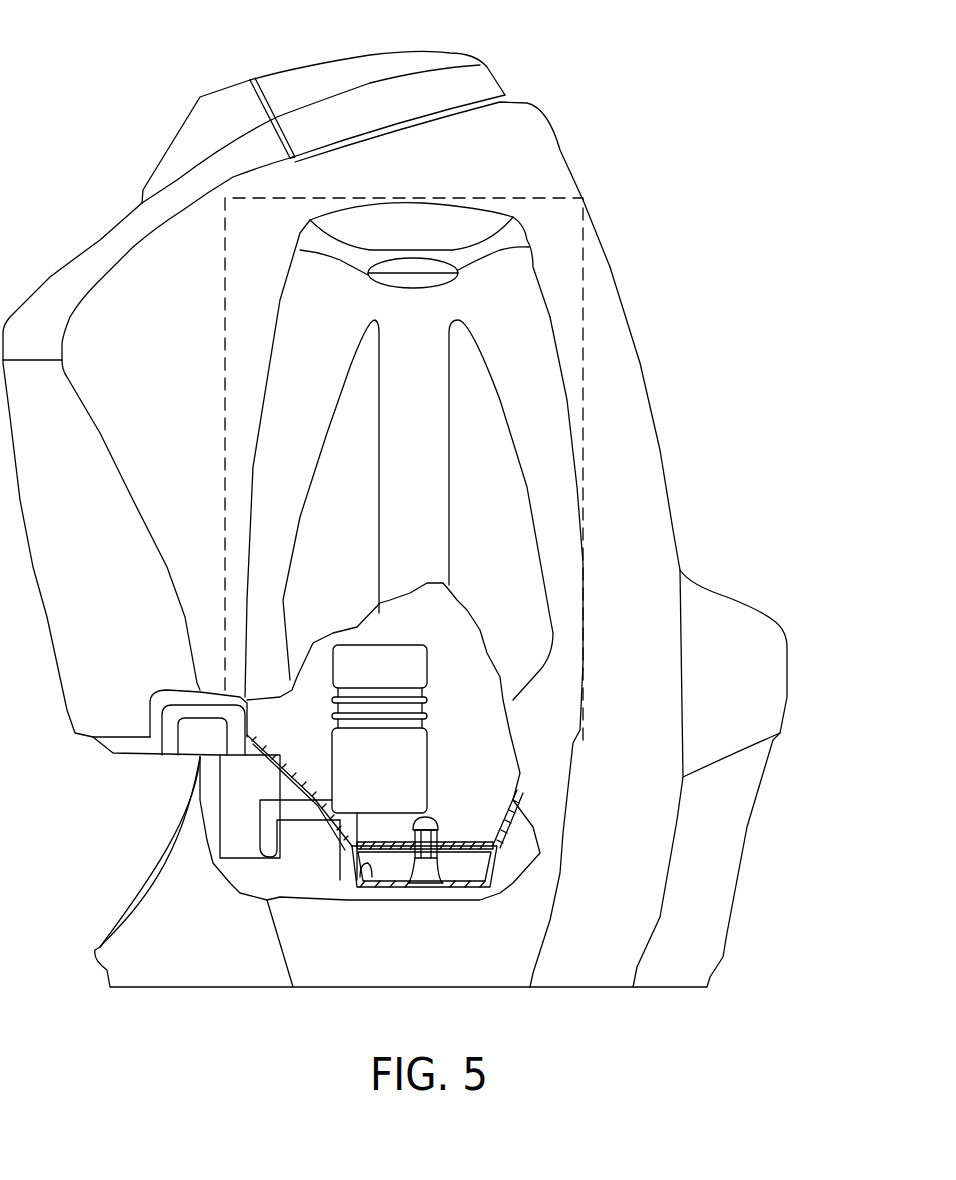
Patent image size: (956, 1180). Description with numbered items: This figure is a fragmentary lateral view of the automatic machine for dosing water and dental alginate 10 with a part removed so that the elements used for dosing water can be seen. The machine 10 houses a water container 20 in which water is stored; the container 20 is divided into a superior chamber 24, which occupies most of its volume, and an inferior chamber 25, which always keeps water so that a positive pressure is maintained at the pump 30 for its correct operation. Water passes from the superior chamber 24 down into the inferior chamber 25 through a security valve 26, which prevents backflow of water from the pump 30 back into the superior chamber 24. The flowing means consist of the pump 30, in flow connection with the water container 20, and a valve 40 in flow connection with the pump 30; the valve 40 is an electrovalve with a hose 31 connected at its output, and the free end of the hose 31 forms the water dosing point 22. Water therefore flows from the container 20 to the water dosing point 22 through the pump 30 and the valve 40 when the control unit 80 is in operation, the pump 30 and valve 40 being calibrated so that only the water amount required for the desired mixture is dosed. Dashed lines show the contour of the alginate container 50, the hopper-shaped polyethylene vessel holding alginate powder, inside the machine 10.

The automatic machine for dosing water and dental alginate 10 is at (113, 72).
The control unit 80 is at (157, 163).
The alginate container 50 is at (585, 246).
The water container 20 is at (533, 423).
The superior chamber 24 is at (487, 807).
The water dosing point 22 is at (163, 755).
The hose 31 is at (162, 838).
The valve 40 is at (256, 806).
The pump 30 is at (395, 780).
The inferior chamber 25 is at (467, 870).
The security valve 26 is at (423, 862).